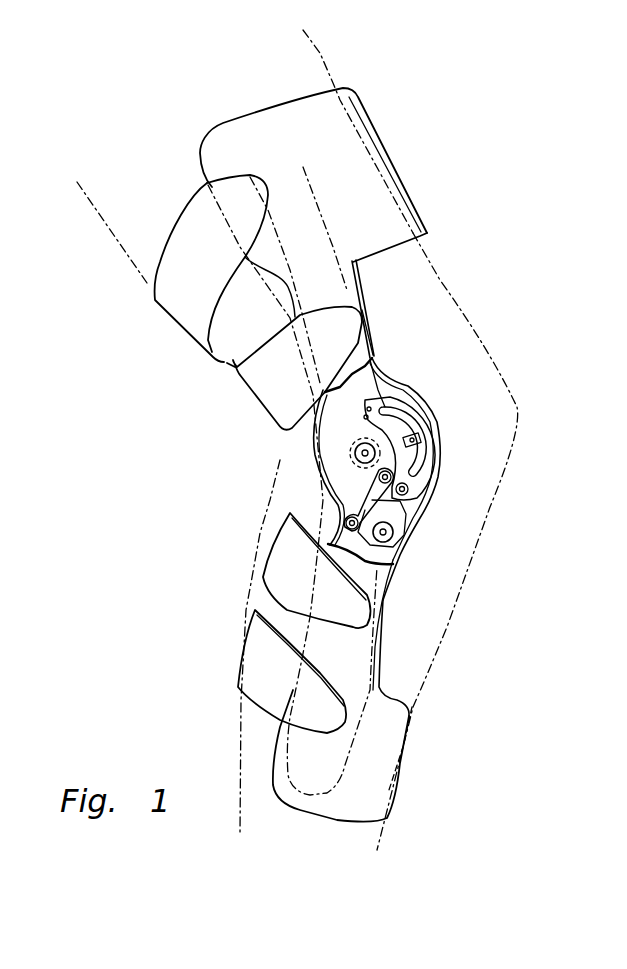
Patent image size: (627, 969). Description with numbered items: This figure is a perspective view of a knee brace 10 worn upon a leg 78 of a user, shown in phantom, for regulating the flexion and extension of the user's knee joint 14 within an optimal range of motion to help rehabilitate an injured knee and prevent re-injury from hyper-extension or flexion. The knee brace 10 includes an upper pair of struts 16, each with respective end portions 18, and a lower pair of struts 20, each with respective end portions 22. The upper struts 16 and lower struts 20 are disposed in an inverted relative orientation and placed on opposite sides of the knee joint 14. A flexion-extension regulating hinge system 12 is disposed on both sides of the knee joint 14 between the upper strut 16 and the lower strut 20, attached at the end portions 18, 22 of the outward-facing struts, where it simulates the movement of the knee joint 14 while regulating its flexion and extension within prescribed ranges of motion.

The knee brace 10 is at (421, 120).
The hinge system 12 is at (413, 390).
The knee joint 14 is at (510, 429).
The upper pair of struts 16 is at (337, 288).
The end portions 18 is at (347, 428).
The lower pair of struts 20 is at (357, 693).
The end portions 22 is at (383, 555).
The leg 78 is at (324, 66).